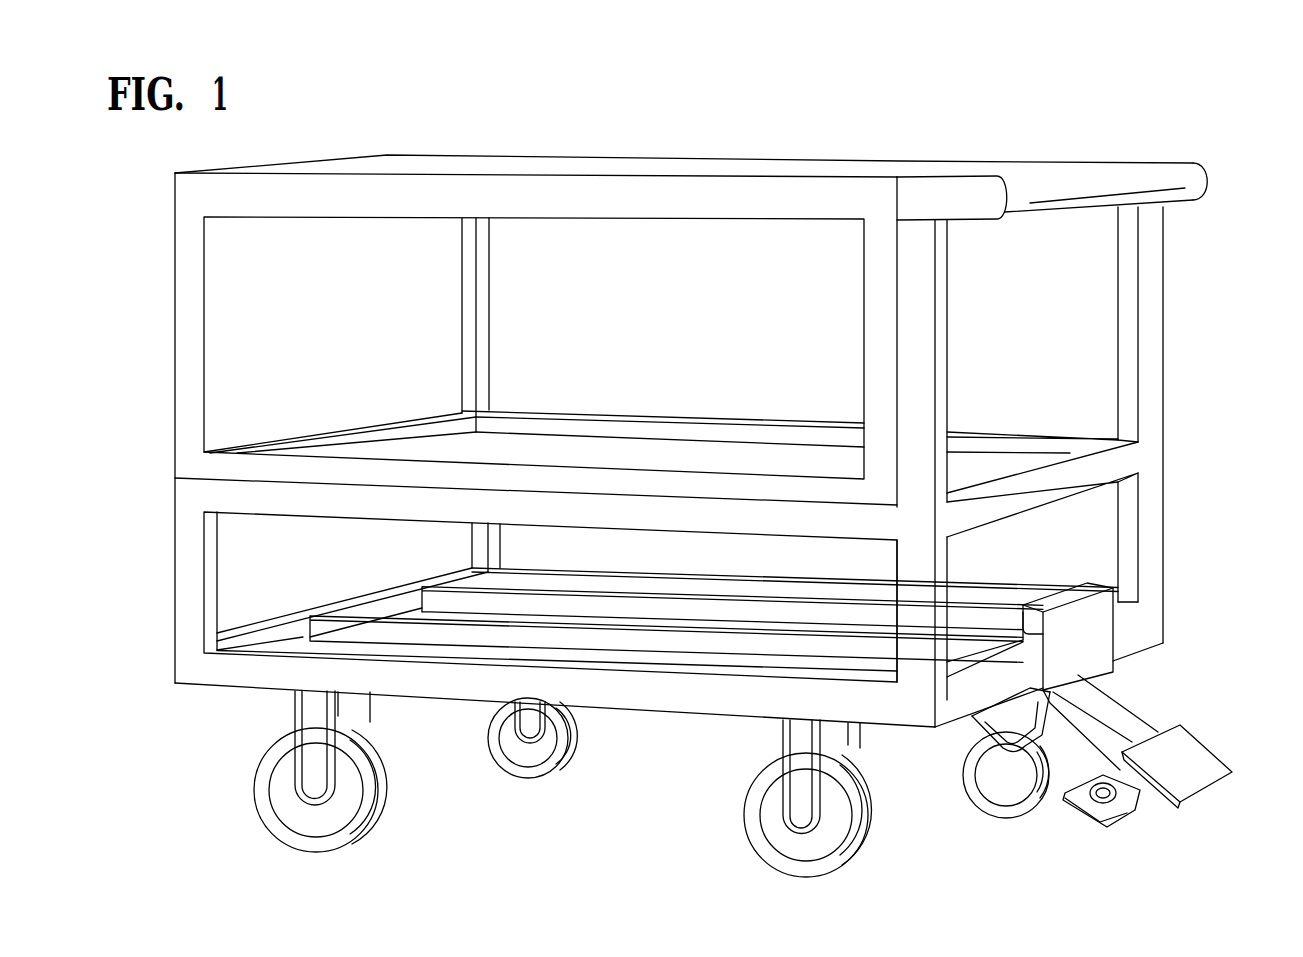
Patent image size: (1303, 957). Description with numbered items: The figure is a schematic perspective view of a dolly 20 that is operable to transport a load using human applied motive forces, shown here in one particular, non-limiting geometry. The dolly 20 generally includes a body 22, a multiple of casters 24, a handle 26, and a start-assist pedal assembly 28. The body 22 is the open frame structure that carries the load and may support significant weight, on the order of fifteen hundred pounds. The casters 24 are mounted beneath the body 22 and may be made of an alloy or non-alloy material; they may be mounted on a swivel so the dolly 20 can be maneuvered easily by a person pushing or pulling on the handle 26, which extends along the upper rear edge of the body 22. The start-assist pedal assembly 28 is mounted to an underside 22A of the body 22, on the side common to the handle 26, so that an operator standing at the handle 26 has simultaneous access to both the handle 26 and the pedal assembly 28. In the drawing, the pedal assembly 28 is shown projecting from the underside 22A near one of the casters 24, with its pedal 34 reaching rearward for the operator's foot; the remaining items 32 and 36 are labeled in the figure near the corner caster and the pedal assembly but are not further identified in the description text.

The dolly 20 is at (1214, 179).
The body 22 is at (1168, 377).
The underside 22A is at (1152, 647).
The casters 24 is at (752, 805).
The handle 26 is at (947, 201).
The start-assist pedal assembly 28 is at (1165, 716).
The rear caster 32 is at (970, 731).
The pedal pad 34 is at (1210, 773).
The brake shoe 36 is at (1082, 813).